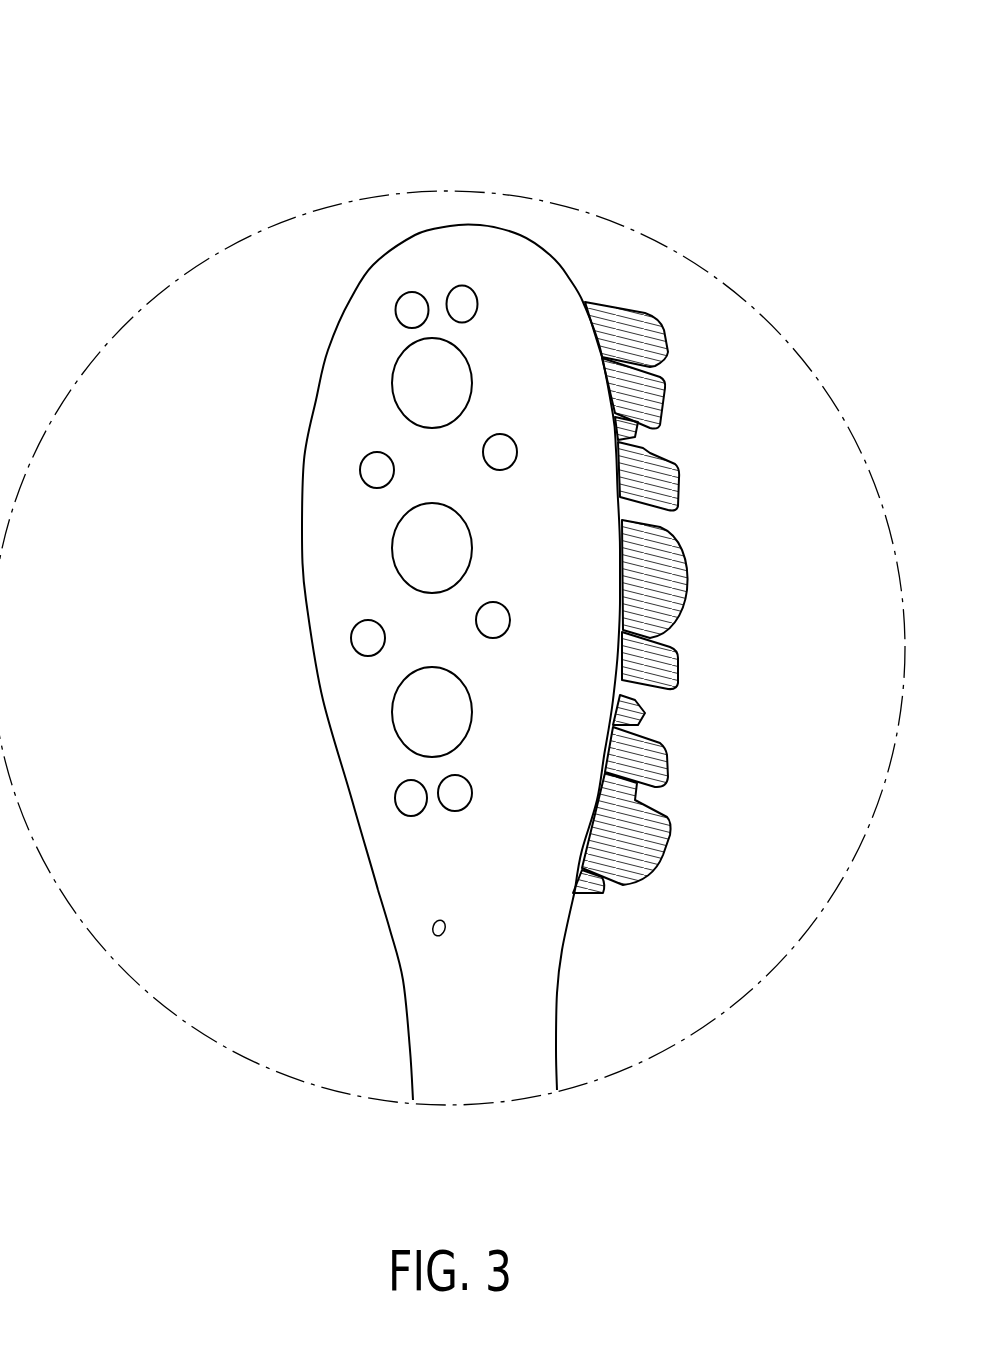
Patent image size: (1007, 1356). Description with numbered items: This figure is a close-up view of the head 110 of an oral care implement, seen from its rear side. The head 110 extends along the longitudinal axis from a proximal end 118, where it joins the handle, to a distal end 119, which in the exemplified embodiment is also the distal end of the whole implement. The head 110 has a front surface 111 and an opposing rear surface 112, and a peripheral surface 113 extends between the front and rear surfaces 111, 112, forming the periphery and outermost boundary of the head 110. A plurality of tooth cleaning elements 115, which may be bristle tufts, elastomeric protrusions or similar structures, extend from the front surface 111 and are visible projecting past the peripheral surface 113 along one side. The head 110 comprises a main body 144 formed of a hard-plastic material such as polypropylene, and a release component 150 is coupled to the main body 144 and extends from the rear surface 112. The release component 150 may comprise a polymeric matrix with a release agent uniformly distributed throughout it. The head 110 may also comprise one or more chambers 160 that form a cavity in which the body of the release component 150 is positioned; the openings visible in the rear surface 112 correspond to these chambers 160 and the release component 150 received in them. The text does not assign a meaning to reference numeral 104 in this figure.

The head 104 is at (498, 250).
The head 110 is at (560, 277).
The rear surface 112 is at (480, 258).
The distal end 119 is at (467, 223).
The tooth cleaning elements 115 is at (638, 289).
The peripheral surface 113 is at (578, 496).
The front surface 111 is at (665, 698).
The main body 144 is at (575, 747).
The proximal end 118 is at (448, 988).
The release component 150 is at (348, 637).
The chamber 160 is at (391, 530).